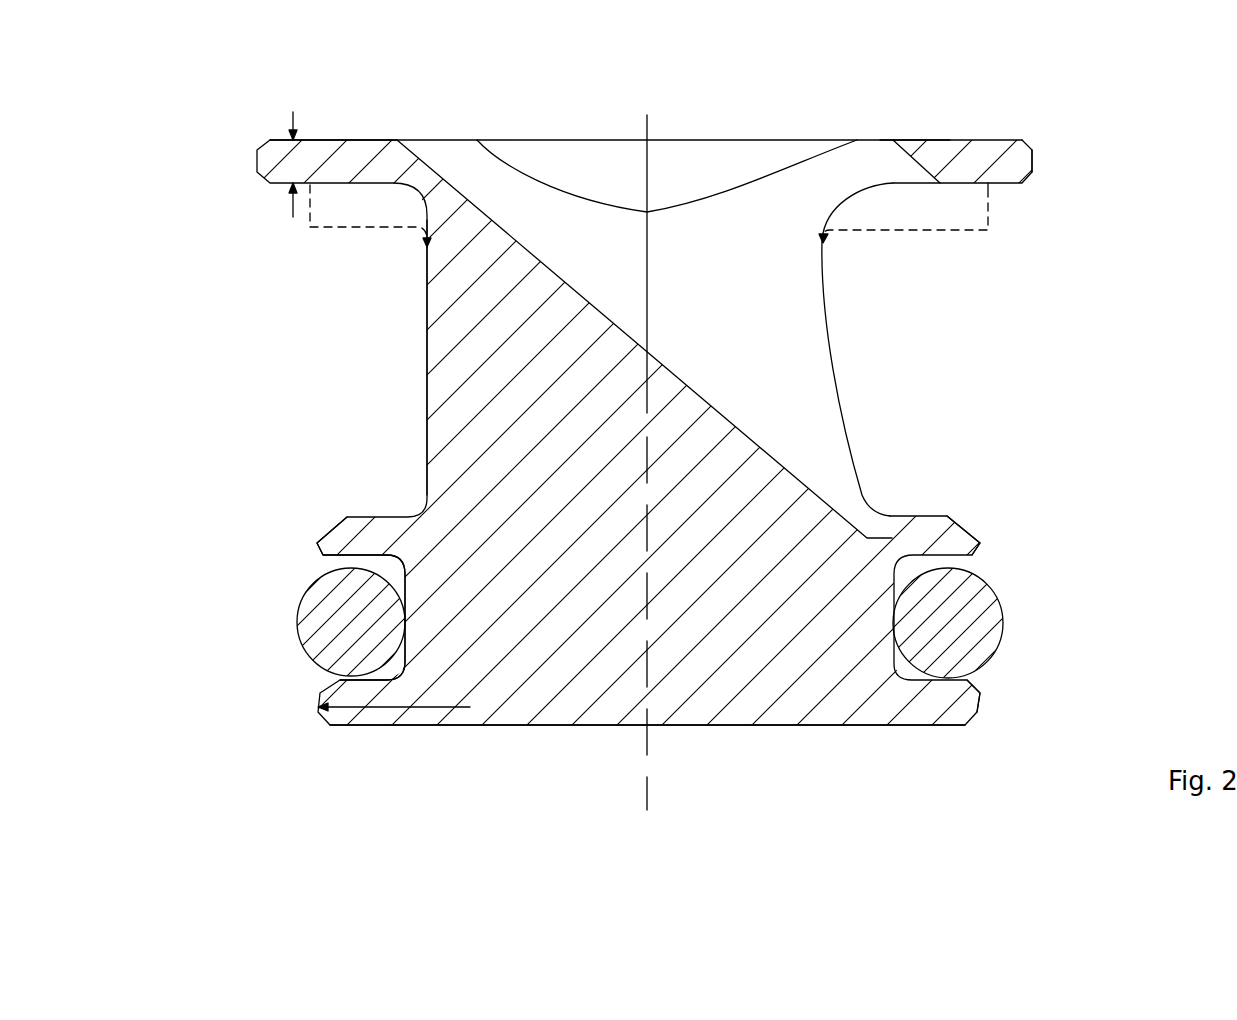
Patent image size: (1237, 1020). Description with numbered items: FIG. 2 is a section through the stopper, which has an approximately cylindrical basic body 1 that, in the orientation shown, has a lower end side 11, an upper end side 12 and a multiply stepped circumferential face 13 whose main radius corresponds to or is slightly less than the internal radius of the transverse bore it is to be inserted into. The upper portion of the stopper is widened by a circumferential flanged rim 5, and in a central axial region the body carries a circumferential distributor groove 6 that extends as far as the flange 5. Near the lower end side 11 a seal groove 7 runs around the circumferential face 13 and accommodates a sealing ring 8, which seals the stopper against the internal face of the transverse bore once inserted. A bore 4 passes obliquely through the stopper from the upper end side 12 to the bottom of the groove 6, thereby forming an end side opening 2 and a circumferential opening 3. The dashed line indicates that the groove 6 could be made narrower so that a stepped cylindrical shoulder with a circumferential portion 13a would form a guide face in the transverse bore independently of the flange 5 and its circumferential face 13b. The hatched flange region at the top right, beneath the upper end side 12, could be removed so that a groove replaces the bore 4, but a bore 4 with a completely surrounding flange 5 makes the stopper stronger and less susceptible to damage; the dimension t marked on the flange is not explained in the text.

The basic body 1 is at (723, 683).
The end side opening 2 is at (680, 141).
The circumferential opening 3 is at (947, 367).
The bore 4 is at (617, 247).
The flanged rim 5 is at (982, 157).
The distributor groove 6 is at (413, 375).
The seal groove 7 is at (333, 562).
The sealing ring 8 is at (323, 623).
The lower end side 11 is at (777, 727).
The upper end side 12 is at (909, 137).
The circumferential face 13 is at (986, 540).
The circumferential portion 13a is at (988, 202).
The circumferential face of the flange 13b is at (1040, 158).
The thickness t is at (298, 160).